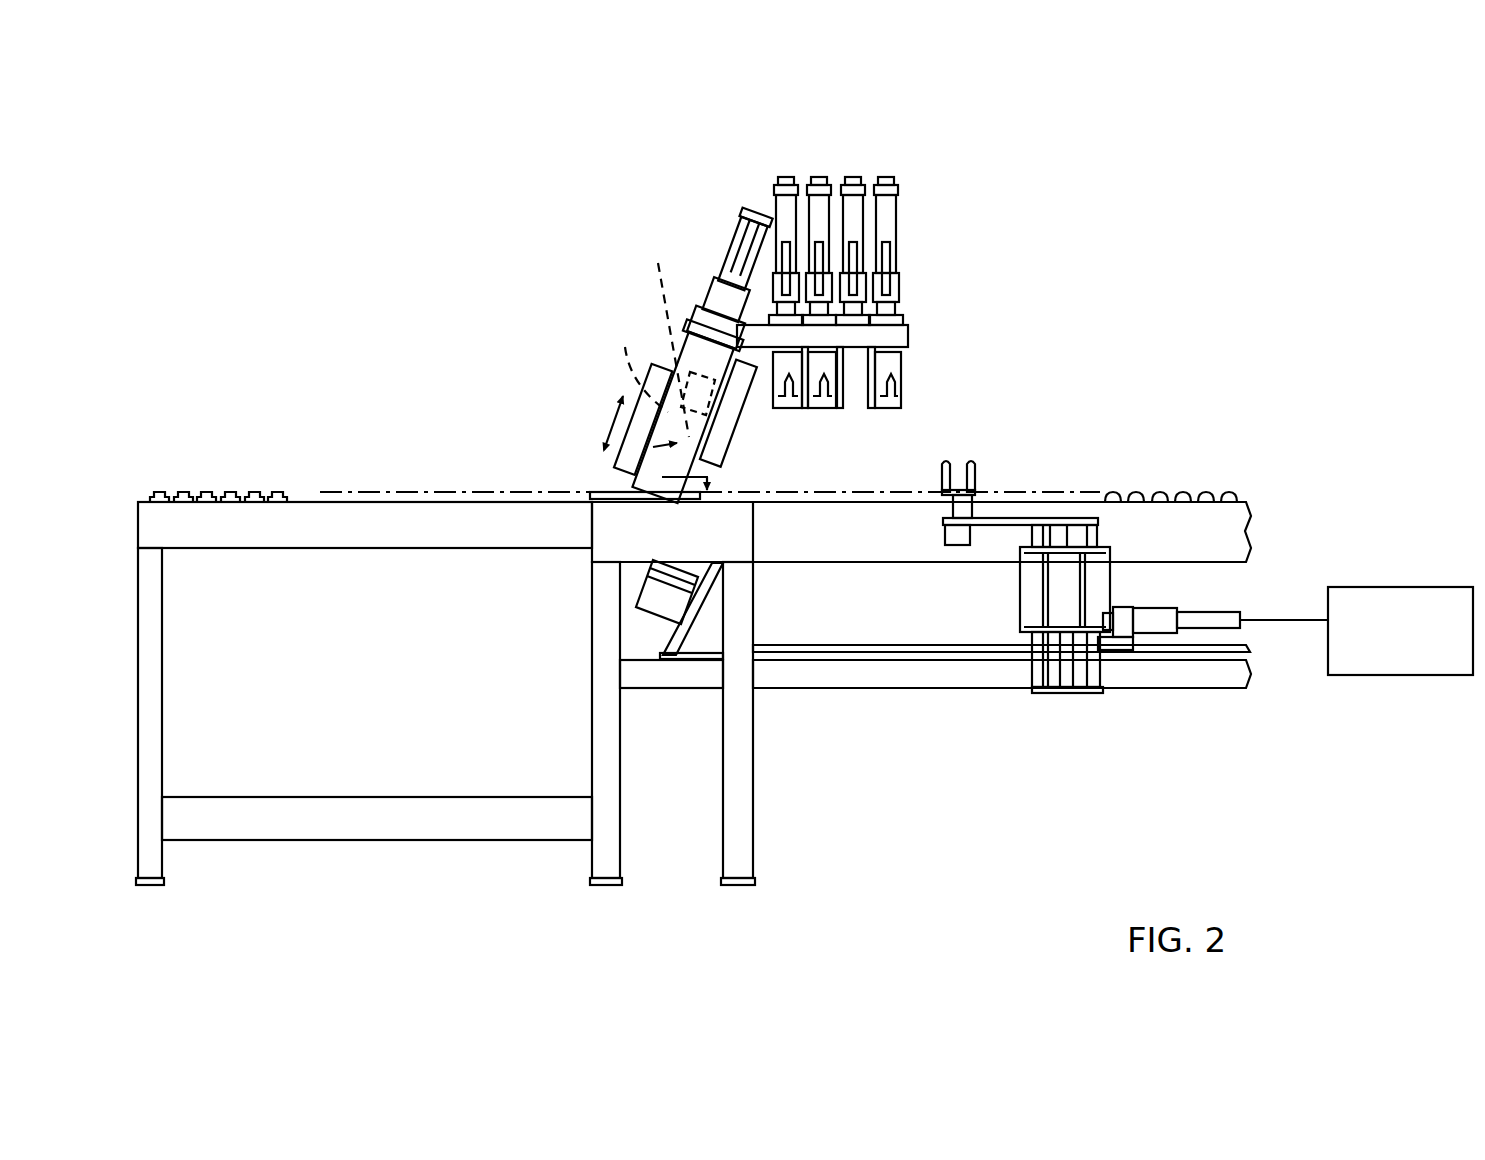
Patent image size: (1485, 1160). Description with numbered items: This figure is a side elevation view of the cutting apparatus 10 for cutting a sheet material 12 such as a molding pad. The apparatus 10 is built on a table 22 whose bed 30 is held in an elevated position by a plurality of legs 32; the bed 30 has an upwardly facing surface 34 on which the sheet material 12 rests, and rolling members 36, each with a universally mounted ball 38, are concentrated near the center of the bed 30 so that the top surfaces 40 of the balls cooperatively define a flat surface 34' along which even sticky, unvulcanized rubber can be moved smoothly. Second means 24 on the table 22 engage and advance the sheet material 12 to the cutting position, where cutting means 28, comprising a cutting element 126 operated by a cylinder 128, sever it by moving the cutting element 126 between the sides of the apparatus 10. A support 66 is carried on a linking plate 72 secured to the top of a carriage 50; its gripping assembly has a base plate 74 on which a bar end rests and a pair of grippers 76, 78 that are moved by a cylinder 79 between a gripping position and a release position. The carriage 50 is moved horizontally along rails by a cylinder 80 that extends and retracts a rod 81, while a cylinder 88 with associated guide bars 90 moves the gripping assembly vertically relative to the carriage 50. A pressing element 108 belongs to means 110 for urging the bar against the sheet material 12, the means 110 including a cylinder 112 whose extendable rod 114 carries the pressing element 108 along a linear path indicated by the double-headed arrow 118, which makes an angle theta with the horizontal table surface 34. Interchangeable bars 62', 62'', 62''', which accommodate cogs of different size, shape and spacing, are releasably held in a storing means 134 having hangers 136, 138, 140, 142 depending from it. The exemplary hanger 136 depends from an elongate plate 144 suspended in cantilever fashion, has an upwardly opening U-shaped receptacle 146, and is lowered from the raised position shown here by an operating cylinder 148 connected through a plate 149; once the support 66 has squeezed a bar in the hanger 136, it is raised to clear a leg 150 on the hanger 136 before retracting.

The apparatus 10 is at (1002, 387).
The sheet material 12 is at (853, 500).
The table 22 is at (520, 648).
The second means 24 is at (1062, 505).
The cutting means 28 is at (700, 553).
The bed 30 is at (713, 498).
The legs 32 is at (150, 745).
The upwardly facing surface 34 is at (619, 473).
The flat surface 34' is at (710, 463).
The rolling members 36 is at (283, 500).
The ball 38 is at (228, 494).
The top surfaces 40 is at (152, 494).
The carriage 50 is at (1060, 695).
The bar 62' is at (923, 374).
The bar 62'' is at (839, 415).
The bar 62''' is at (791, 406).
The support 66 is at (1037, 438).
The linking plate 72 is at (1000, 520).
The base plate 74 is at (962, 460).
The gripper 76 is at (940, 475).
The gripper 78 is at (976, 470).
The cylinder 79 is at (958, 540).
The cylinder 80 is at (1390, 663).
The rod 81 is at (1118, 612).
The cylinder 88 is at (1065, 580).
The guide bars 90 is at (1040, 680).
The pressing element 108 is at (631, 365).
The means for urging 110 is at (657, 328).
The cylinder 112 is at (747, 240).
The extendable rod 114 is at (661, 346).
The double-headed arrow 118 is at (613, 423).
The cutting element 126 is at (665, 503).
The cylinder 128 is at (655, 613).
The storing means 134 is at (917, 280).
The hanger 136 is at (880, 370).
The hanger 138 is at (850, 405).
The hanger 140 is at (800, 493).
The hanger 142 is at (803, 347).
The elongate plate 144 is at (762, 328).
The U-shaped receptacle 146 is at (883, 405).
The operating cylinder 148 is at (893, 205).
The plate 149 is at (900, 318).
The leg 150 is at (897, 400).